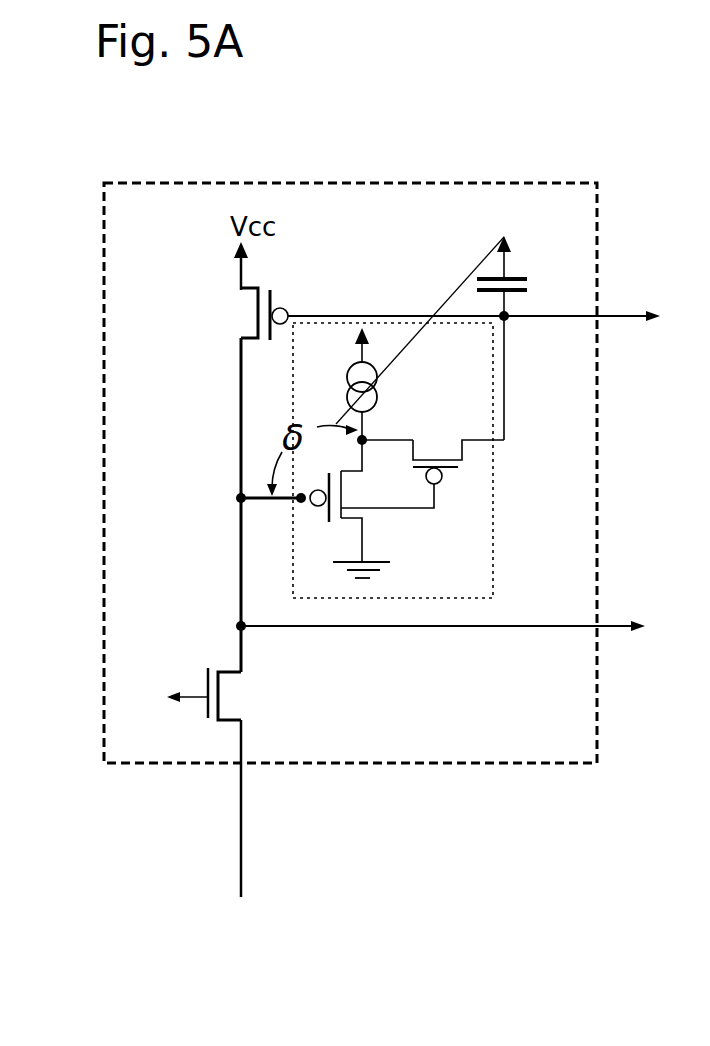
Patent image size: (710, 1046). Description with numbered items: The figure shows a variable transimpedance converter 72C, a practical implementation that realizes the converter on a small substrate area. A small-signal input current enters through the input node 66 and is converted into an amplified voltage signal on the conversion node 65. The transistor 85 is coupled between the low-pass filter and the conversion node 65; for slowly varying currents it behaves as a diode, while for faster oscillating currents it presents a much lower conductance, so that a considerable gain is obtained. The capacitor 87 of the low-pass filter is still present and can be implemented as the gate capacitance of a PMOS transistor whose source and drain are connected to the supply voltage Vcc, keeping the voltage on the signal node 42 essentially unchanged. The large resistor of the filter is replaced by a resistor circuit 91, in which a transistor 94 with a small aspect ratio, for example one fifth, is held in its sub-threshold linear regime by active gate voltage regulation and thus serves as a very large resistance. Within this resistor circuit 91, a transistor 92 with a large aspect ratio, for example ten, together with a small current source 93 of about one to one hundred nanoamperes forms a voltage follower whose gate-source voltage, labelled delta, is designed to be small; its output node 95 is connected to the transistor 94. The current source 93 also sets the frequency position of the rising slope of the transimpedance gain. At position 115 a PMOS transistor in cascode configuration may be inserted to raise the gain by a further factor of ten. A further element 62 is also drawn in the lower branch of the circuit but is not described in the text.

The variable transimpedance converter 72C is at (395, 181).
The transistor 85 is at (240, 313).
The position for cascode transistor 115 is at (226, 446).
The signal node 42 is at (625, 318).
The capacitor 87 is at (462, 280).
The resistor circuit 91 is at (495, 551).
The current source 93 is at (378, 382).
The output node 95 is at (388, 439).
The transistor 94 is at (460, 481).
The transistor 92 is at (320, 520).
The conversion node 65 is at (467, 630).
The select transistor 62 is at (207, 713).
The input node 66 is at (243, 875).